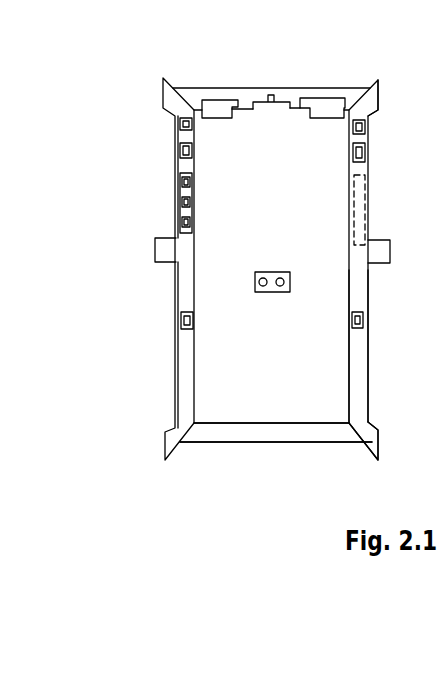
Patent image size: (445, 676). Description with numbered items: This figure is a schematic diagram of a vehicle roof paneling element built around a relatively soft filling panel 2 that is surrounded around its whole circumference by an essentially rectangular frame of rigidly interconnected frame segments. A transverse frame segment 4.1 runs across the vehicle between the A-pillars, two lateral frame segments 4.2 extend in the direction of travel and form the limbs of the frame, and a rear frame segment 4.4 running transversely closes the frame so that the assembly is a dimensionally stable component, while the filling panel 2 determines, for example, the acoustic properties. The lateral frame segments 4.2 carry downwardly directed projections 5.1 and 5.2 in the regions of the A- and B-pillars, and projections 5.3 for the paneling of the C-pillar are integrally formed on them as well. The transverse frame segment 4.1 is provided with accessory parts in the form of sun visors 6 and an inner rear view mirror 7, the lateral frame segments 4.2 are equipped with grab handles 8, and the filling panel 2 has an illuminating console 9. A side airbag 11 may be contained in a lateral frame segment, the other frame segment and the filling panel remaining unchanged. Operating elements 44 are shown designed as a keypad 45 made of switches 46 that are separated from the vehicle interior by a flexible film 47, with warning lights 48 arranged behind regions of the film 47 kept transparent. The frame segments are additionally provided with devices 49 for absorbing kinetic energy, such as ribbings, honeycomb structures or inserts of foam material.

The filling panel 2 is at (281, 396).
The frame segment 4.1 is at (313, 98).
The lateral frame segments 4.2 is at (360, 367).
The rear frame segment 4.4 is at (273, 442).
The projection 5.1 is at (373, 100).
The projection 5.2 is at (378, 252).
The projection 5.3 is at (372, 438).
The sun visor 6 is at (217, 102).
The inner rear view mirror 7 is at (271, 96).
The grab handle 8 is at (368, 142).
The illuminating console 9 is at (275, 293).
The side airbag 11 is at (367, 195).
The operating elements 44 is at (204, 182).
The keypad 45 is at (178, 187).
The switches 46 is at (178, 208).
The flexible film 47 is at (176, 162).
The warning lights 48 is at (178, 223).
The devices for absorbing kinetic energy 49 is at (175, 122).